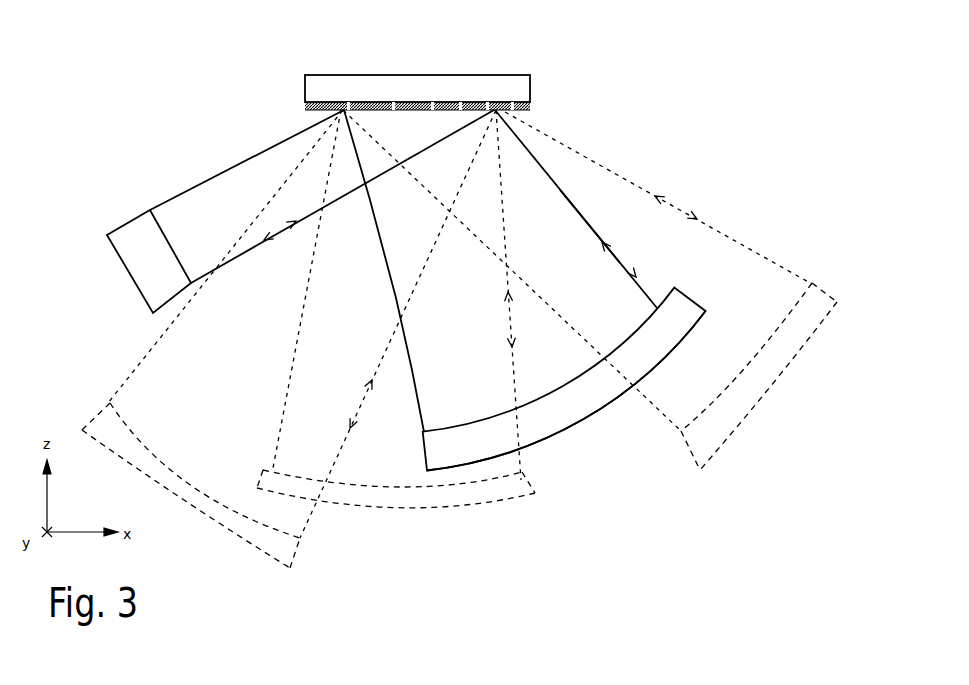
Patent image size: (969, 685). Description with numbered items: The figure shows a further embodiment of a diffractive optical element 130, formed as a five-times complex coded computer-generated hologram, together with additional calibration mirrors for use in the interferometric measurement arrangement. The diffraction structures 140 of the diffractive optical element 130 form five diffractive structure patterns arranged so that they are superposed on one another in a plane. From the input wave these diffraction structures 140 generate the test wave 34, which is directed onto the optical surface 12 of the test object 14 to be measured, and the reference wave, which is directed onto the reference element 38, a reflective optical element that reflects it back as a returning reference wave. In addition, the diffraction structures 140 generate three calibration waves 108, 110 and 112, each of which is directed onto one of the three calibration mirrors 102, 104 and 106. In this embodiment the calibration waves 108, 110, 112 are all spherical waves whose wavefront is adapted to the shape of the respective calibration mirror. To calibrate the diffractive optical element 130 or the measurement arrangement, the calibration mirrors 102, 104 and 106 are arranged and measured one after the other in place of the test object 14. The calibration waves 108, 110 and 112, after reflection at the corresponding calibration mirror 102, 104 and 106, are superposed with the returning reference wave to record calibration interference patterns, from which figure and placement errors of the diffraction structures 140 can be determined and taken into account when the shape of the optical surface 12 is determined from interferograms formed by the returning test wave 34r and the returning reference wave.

The diffractive optical element 130 is at (512, 86).
The diffraction structures 140 is at (524, 113).
The reference element 38 is at (131, 277).
The test wave 34 is at (637, 273).
The returning test wave 34r is at (603, 254).
The optical surface 12 is at (543, 396).
The test object 14 is at (678, 344).
The calibration mirror 102 is at (298, 550).
The calibration mirror 104 is at (470, 509).
The calibration mirror 106 is at (821, 286).
The calibration wave 108 is at (356, 431).
The calibration wave 110 is at (509, 340).
The calibration wave 112 is at (700, 216).